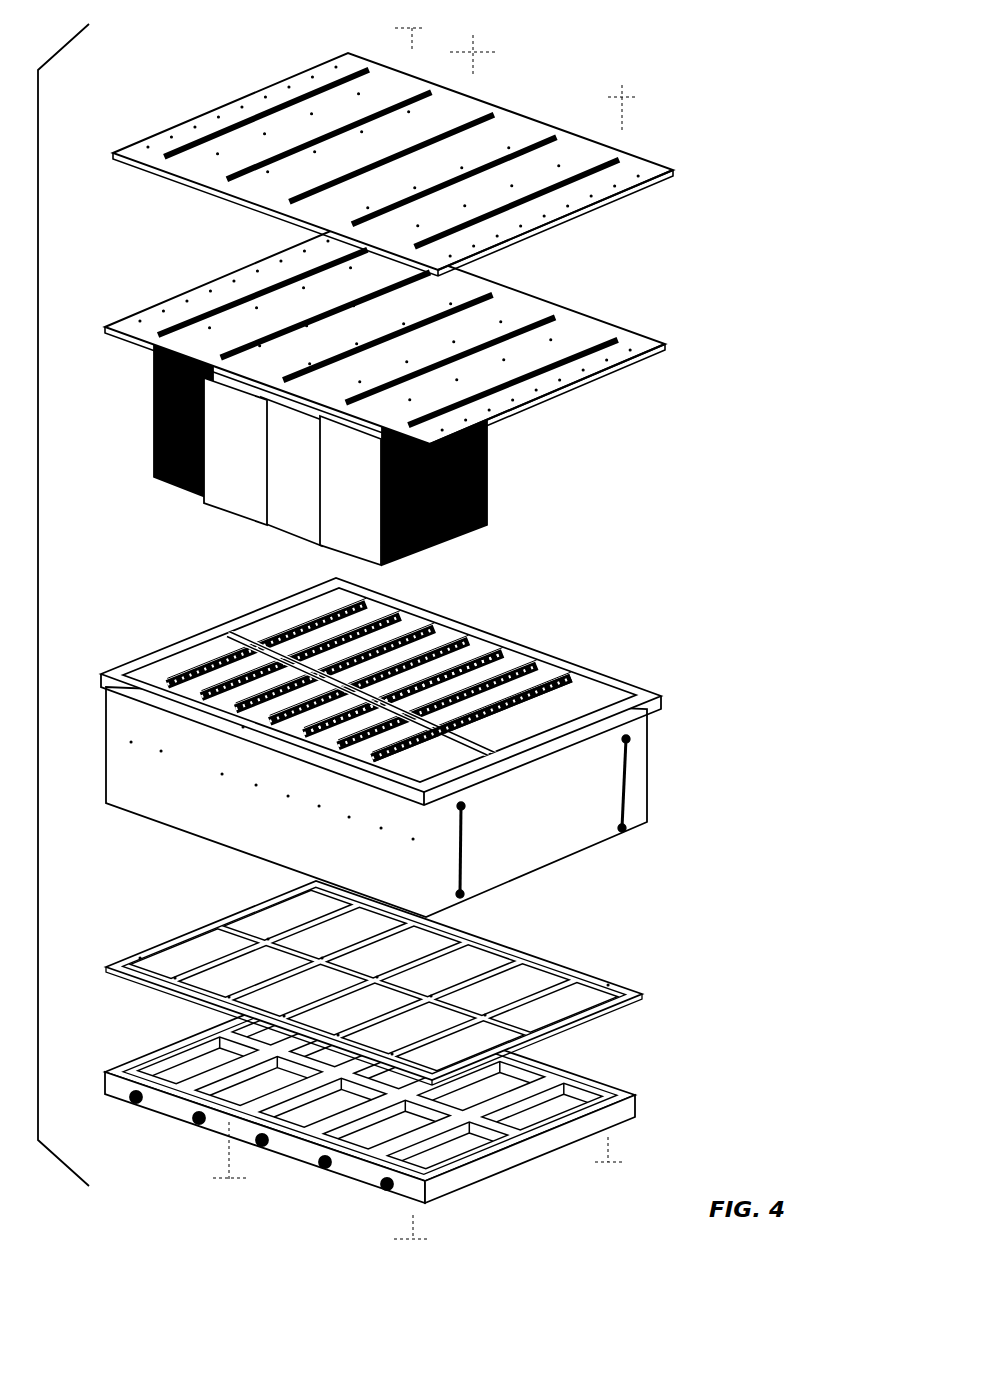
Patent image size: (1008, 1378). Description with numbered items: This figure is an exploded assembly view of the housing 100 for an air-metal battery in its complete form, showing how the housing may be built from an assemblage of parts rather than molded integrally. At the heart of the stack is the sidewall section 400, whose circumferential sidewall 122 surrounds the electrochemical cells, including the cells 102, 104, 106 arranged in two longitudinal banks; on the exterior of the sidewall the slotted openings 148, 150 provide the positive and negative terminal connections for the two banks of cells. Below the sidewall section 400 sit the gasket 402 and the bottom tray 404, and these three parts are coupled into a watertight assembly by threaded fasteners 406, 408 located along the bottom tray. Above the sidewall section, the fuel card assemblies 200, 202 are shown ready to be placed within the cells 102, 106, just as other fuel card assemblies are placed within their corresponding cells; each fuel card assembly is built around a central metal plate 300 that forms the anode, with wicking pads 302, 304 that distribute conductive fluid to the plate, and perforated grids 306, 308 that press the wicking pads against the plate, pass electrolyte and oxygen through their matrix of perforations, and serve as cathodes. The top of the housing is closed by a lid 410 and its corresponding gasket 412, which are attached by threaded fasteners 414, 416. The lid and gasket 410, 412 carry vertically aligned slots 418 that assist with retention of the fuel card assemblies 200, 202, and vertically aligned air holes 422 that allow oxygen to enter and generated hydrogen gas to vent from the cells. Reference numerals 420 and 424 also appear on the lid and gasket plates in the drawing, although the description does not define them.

The housing 100 is at (396, 625).
The electrochemical cell 102 is at (388, 485).
The electrochemical cell 104 is at (300, 611).
The electrochemical cell 106 is at (297, 712).
The circumferential sidewall 122 is at (272, 790).
The slotted opening 148 is at (463, 838).
The slotted opening 150 is at (622, 790).
The fuel card assembly 200 is at (196, 664).
The fuel card assembly 202 is at (243, 727).
The metal plate 300 is at (314, 456).
The wicking pad 302 is at (250, 452).
The wicking pad 304 is at (373, 490).
The grid 306 is at (155, 436).
The grid 308 is at (487, 478).
The sidewall section 400 is at (402, 485).
The gasket 402 is at (645, 994).
The bottom tray 404 is at (404, 1112).
The threaded fastener 406 is at (138, 1150).
The threaded fastener 408 is at (227, 1153).
The lid 410 is at (385, 336).
The gasket 412 is at (405, 144).
The threaded fastener 414 is at (473, 55).
The threaded fastener 416 is at (655, 70).
The vertically aligned slot 418 is at (627, 150).
The plate edge 420 is at (593, 340).
The vertically aligned air hole 422 is at (563, 157).
The rib 424 is at (522, 316).